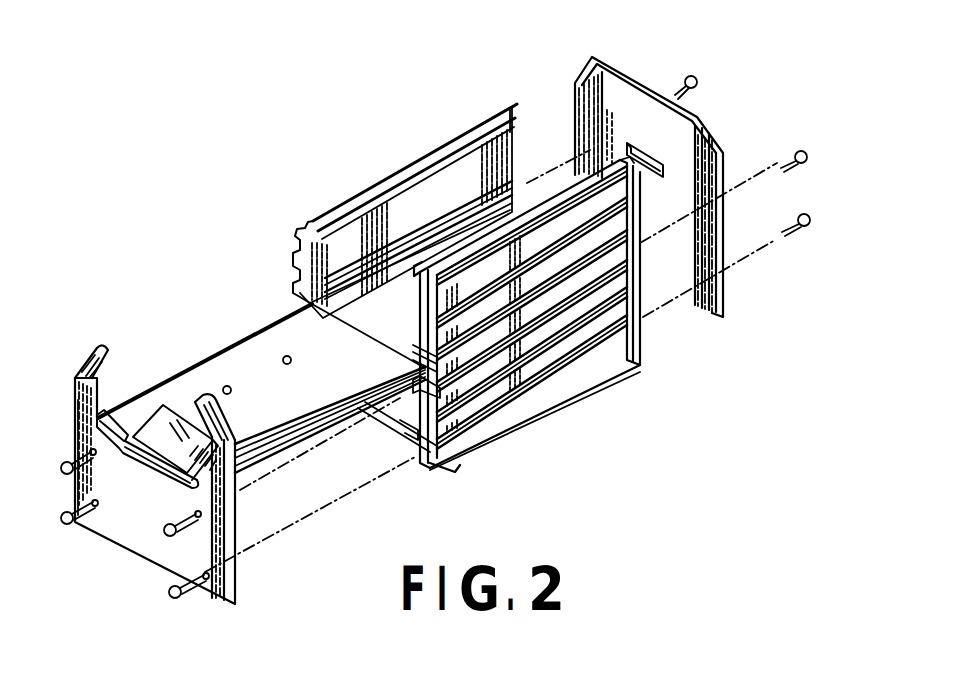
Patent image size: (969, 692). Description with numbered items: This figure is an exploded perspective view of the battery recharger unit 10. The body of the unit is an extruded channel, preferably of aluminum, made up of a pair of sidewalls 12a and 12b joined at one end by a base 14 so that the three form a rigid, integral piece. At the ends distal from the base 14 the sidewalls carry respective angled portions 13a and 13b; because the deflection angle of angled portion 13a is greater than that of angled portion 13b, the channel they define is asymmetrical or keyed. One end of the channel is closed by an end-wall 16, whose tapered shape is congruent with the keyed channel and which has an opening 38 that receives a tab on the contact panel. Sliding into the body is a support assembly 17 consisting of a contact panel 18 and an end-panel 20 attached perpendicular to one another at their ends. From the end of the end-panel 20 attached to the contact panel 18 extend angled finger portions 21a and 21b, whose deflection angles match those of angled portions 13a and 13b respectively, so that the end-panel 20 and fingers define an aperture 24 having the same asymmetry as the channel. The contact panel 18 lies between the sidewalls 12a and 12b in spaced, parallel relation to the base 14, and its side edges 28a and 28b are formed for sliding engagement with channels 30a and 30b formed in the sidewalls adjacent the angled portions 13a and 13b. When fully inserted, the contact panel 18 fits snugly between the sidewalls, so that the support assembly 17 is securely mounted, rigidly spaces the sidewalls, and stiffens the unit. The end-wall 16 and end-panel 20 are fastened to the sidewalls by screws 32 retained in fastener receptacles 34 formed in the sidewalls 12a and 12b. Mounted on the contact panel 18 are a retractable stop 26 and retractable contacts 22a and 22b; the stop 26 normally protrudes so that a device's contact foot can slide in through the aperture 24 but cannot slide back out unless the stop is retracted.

The recharger unit 10 is at (551, 327).
The sidewall 12a is at (640, 357).
The sidewall 12b is at (300, 272).
The angled portion 13a is at (653, 307).
The angled portion 13b is at (302, 238).
The base 14 is at (400, 437).
The end-wall 16 is at (700, 128).
The support assembly 17 is at (160, 366).
The contact panel 18 is at (297, 424).
The end-panel 20 is at (118, 542).
The angled finger portion 21a is at (230, 485).
The angled finger portion 21b is at (99, 352).
The retractable contact 22a is at (222, 390).
The retractable contact 22b is at (291, 358).
The aperture 24 is at (78, 400).
The retractable stop 26 is at (155, 425).
The side edge 28a is at (340, 418).
The side edge 28b is at (264, 305).
The channel 30a is at (427, 378).
The channel 30b is at (470, 192).
The screw 32 is at (95, 508).
The fastener receptacle 34 is at (406, 445).
The opening 38 is at (647, 170).